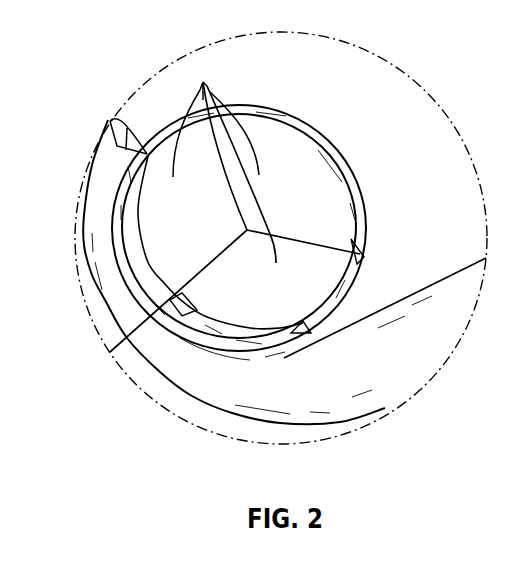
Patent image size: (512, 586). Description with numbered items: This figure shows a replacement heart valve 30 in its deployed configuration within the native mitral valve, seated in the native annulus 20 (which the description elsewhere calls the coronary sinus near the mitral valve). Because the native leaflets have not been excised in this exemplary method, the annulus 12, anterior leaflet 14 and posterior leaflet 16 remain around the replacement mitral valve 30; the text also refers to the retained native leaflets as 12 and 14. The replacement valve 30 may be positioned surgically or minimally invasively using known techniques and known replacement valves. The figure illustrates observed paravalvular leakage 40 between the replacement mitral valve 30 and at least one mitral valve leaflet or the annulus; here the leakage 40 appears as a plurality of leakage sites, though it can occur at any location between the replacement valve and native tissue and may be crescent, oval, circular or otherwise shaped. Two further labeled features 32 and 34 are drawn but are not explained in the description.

The annulus 12 is at (306, 106).
The anterior leaflet 14 is at (358, 227).
The posterior leaflet 16 is at (340, 322).
The native annulus 20 is at (95, 205).
The replacement heart valve 30 is at (268, 147).
The stent ring 32 is at (318, 143).
The commissure tip 34 is at (203, 79).
The paravalvular leakage 40 is at (108, 125).